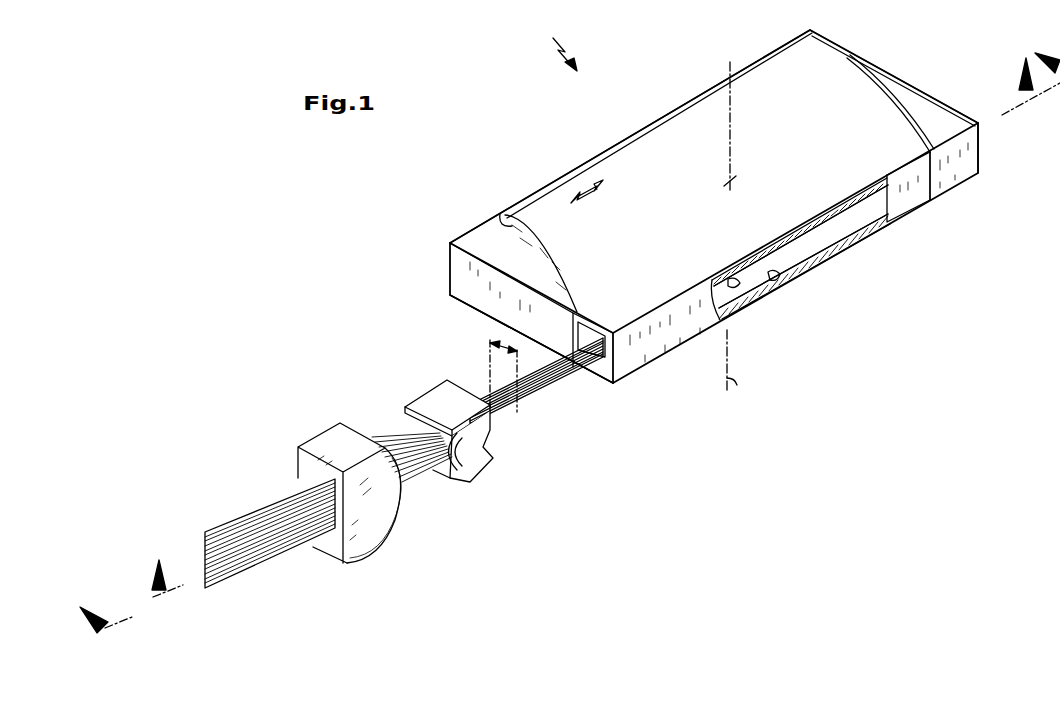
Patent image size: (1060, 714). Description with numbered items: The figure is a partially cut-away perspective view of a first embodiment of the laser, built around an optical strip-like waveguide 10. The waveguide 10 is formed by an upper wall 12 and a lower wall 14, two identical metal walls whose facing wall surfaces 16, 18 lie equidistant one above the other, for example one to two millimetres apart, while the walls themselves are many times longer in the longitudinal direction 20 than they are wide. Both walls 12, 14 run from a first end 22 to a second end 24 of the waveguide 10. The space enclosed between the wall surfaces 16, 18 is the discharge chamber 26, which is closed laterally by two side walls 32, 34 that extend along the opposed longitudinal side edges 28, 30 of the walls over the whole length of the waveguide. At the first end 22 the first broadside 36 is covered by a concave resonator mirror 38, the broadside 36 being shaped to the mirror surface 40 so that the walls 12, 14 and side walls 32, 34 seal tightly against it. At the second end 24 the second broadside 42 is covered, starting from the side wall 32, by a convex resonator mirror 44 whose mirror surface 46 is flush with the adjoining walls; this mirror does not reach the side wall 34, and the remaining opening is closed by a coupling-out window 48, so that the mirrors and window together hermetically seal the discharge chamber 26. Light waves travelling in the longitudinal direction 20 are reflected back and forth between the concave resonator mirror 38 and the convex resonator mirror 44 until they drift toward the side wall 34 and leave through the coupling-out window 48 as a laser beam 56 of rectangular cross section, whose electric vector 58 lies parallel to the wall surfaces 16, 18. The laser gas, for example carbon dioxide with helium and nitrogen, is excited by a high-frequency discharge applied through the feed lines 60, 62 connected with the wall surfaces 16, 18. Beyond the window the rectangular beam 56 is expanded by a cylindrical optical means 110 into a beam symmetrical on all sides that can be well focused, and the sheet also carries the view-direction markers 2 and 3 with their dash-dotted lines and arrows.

The optical strip-like waveguide 10 is at (553, 43).
The upper wall 12 is at (768, 256).
The lower wall 14 is at (862, 235).
The wall surface 16 is at (733, 283).
The wall surface 18 is at (775, 283).
The longitudinal direction 20 is at (595, 196).
The first end 22 is at (912, 88).
The second end 24 is at (458, 309).
The discharge chamber 26 is at (820, 240).
The longitudinal side edge 28 is at (633, 135).
The longitudinal side edge 30 is at (893, 172).
The side wall 32 is at (564, 176).
The side wall 34 is at (913, 210).
The first broadside 36 is at (880, 70).
The concave resonator mirror 38 is at (948, 120).
The mirror surface 40 is at (855, 66).
The second broadside 42 is at (505, 214).
The convex resonator mirror 44 is at (452, 272).
The mirror surface 46 is at (502, 218).
The coupling-out window 48 is at (592, 328).
The laser beam 56 is at (560, 377).
The electric vector 58 is at (490, 340).
The feed line 60 is at (727, 72).
The feed line 62 is at (728, 384).
The cylindrical optical means 110 is at (398, 505).
The section 2-2 view direction 2 is at (606, 341).
The section 3-3 view direction 3 is at (570, 357).